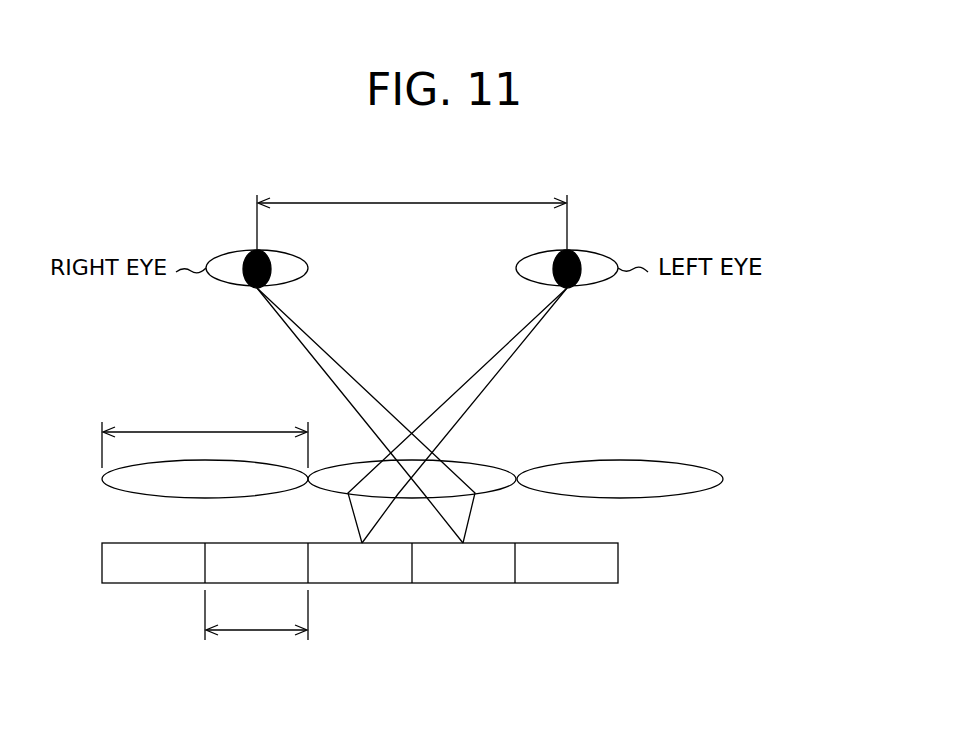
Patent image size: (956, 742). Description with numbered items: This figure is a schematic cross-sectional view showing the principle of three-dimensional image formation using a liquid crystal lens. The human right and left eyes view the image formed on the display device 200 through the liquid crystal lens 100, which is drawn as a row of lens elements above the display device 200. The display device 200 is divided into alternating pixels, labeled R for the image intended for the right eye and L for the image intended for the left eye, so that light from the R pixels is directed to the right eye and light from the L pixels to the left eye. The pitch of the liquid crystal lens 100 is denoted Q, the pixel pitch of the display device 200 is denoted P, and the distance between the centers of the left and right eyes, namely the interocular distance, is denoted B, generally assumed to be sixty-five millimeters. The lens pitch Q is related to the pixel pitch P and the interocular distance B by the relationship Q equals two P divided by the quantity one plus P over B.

The liquid crystal lens 100 is at (703, 477).
The display device 200 is at (618, 565).
The interocular distance B is at (412, 211).
The pitch of the liquid crystal lens Q is at (205, 434).
The pixel pitch P is at (256, 625).